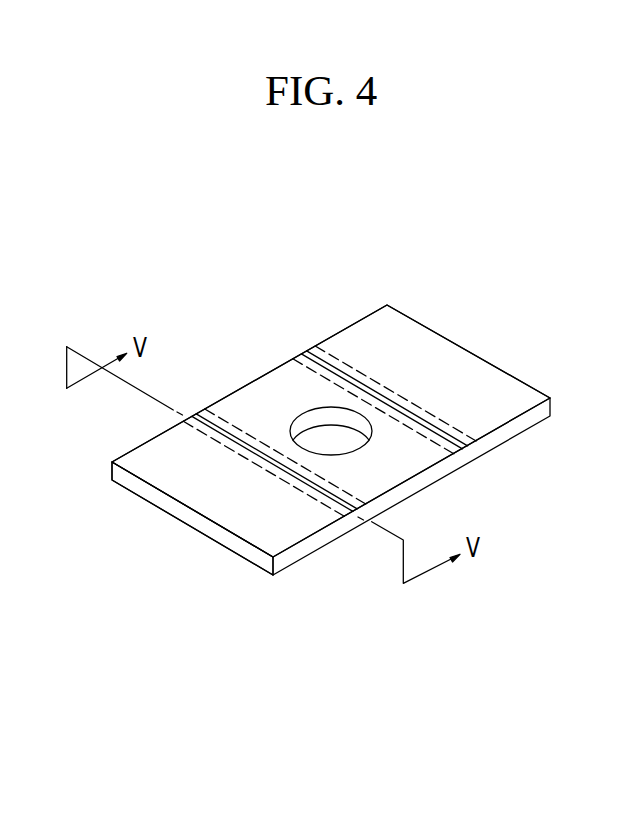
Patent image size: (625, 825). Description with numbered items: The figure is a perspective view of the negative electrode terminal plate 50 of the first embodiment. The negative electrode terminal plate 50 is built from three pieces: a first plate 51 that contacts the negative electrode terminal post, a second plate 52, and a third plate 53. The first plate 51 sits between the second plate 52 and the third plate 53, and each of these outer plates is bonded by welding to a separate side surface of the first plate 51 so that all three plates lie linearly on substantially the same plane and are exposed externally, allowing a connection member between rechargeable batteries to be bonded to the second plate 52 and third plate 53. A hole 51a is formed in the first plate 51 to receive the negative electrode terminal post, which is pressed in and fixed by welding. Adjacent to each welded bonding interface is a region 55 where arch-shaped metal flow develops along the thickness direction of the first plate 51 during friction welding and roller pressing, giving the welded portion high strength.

The negative electrode terminal plate 50 is at (196, 294).
The first plate 51 is at (241, 407).
The hole 51a is at (308, 423).
The second plate 52 is at (215, 498).
The third plate 53 is at (440, 358).
The region adjacent to the bonding interface 55 is at (313, 490).